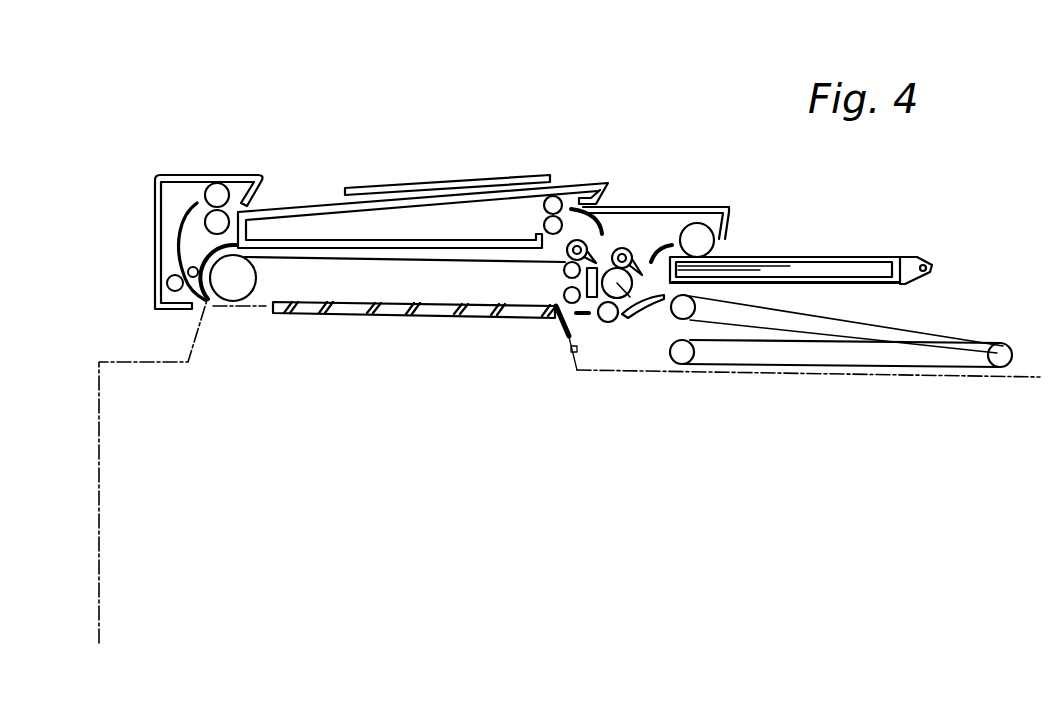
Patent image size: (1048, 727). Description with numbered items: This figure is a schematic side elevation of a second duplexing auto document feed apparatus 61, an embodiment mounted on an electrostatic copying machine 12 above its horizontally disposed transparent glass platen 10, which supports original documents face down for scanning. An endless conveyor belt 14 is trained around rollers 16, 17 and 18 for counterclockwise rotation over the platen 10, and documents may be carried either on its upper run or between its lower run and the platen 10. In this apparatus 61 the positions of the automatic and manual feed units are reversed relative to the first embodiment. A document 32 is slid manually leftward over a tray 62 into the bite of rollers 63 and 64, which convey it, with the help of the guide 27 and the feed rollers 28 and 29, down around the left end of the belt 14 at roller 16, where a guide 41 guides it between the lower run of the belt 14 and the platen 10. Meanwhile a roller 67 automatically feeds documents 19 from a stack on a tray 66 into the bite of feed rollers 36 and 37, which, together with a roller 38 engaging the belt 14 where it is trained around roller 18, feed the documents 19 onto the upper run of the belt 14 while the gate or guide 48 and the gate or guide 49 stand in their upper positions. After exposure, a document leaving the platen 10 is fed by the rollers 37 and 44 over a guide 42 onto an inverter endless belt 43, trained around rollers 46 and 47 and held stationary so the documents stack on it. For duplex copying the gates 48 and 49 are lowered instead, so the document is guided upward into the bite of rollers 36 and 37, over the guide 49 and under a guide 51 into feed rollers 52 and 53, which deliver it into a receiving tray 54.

The transparent glass platen 10 is at (313, 313).
The electrostatic copying machine 12 is at (99, 562).
The endless conveyor belt 14 is at (410, 262).
The roller 16 is at (233, 283).
The roller 17 is at (570, 296).
The roller 18 is at (563, 272).
The document 19 is at (850, 262).
The guide 27 is at (160, 213).
The roller 28 is at (190, 269).
The roller 29 is at (174, 284).
The document 32 is at (460, 184).
The feed roller 36 is at (700, 210).
The feed roller 37 is at (630, 297).
The roller 38 is at (585, 243).
The guide 41 is at (196, 222).
The guide 42 is at (648, 312).
The inverter endless belt 43 is at (845, 368).
The roller 44 is at (607, 322).
The roller 46 is at (680, 364).
The roller 47 is at (1000, 368).
The gate or guide 48 is at (683, 310).
The gate or guide 49 is at (665, 245).
The guide 51 is at (628, 248).
The feed roller 52 is at (558, 197).
The feed roller 53 is at (527, 238).
The receiving tray 54 is at (486, 238).
The duplexing auto document feed apparatus 61 is at (381, 126).
The tray 62 is at (285, 210).
The roller 63 is at (172, 185).
The roller 64 is at (218, 193).
The tray 66 is at (862, 284).
The roller 67 is at (712, 236).